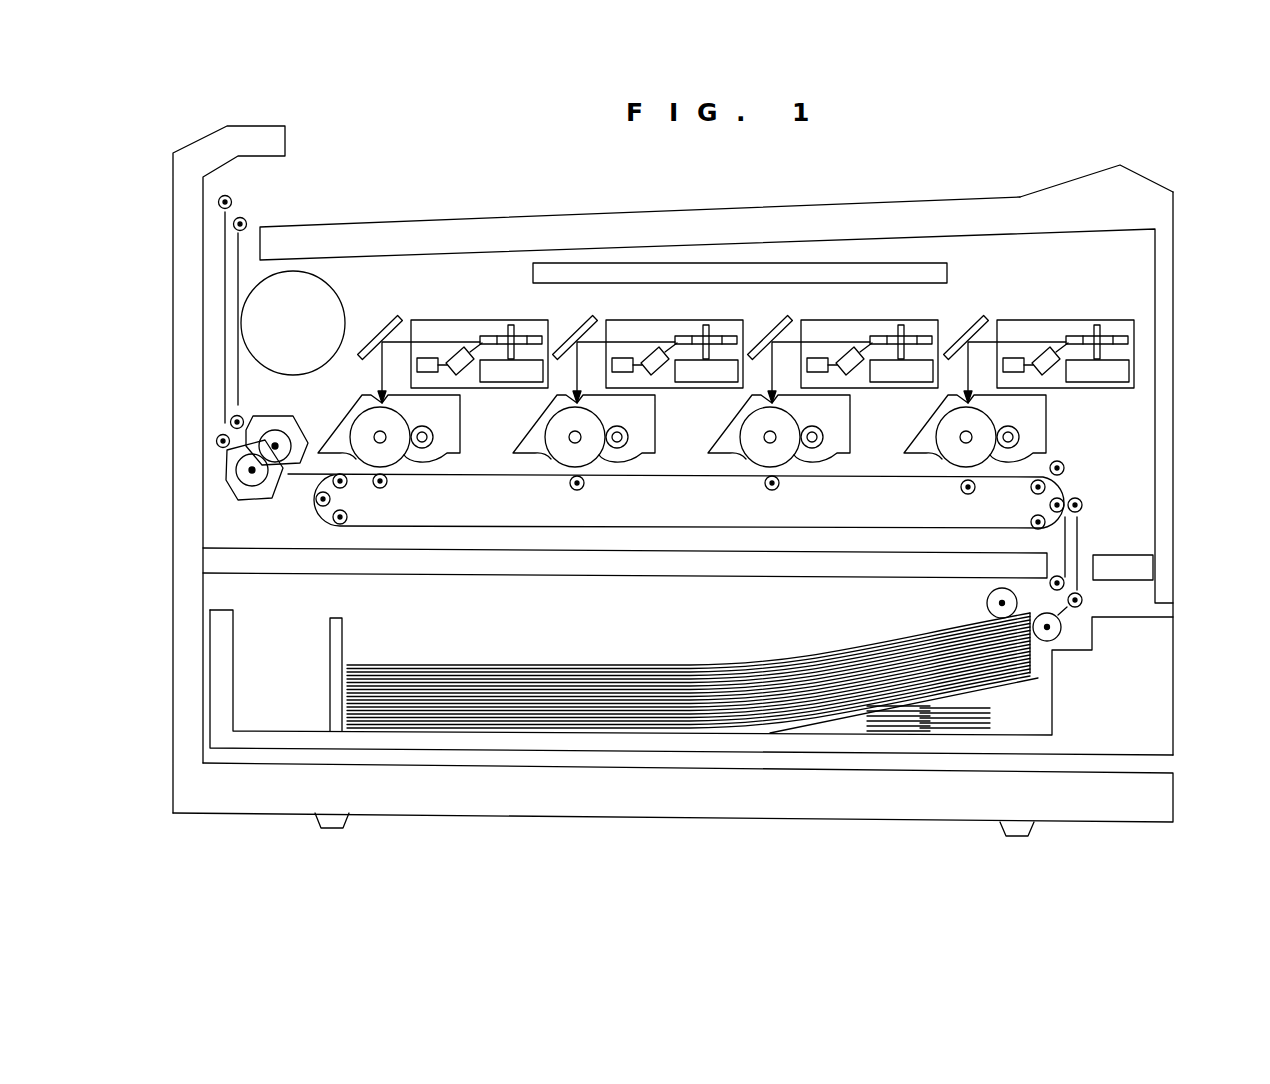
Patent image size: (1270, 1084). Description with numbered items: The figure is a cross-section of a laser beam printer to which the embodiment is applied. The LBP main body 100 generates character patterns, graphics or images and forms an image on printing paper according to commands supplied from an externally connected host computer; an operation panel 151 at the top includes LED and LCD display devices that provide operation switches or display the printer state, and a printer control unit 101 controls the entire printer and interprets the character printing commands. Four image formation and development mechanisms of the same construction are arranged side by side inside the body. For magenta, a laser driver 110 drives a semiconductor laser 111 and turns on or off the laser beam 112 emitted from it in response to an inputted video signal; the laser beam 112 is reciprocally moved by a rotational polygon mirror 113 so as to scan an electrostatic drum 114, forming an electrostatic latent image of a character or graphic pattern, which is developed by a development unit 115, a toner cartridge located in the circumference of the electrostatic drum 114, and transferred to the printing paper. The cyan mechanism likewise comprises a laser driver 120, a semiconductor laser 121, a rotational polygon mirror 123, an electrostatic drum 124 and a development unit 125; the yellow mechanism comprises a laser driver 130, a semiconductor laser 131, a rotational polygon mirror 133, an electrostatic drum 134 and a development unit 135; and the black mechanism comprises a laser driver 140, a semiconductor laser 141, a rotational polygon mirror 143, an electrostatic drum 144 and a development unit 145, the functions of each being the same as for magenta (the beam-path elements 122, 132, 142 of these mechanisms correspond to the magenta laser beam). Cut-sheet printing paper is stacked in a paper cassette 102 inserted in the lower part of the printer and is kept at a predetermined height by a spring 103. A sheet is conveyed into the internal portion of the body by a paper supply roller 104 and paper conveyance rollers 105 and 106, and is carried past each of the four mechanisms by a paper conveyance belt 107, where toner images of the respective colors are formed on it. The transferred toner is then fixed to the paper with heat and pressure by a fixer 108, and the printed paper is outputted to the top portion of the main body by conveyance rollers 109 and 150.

The LBP main body 100 is at (1177, 292).
The printer control unit 101 is at (950, 272).
The paper cassette 102 is at (1175, 690).
The spring 103 is at (927, 713).
The paper supply roller 104 is at (986, 603).
The paper conveyance roller 105 is at (1083, 600).
The paper conveyance roller 106 is at (1083, 505).
The paper conveyance belt 107 is at (810, 478).
The fixer 108 is at (226, 483).
The conveyance roller 109 is at (216, 441).
The laser driver 110 is at (1027, 330).
The semiconductor laser 111 is at (1039, 372).
The laser beam 112 is at (1064, 321).
The rotational polygon mirror 113 is at (1106, 326).
The electrostatic drum 114 is at (946, 460).
The development unit 115 is at (1017, 428).
The laser driver 120 is at (805, 329).
The semiconductor laser 121 is at (843, 372).
The polygon mirror 122 is at (854, 331).
The rotational polygon mirror 123 is at (905, 323).
The electrostatic drum 124 is at (748, 459).
The development unit 125 is at (804, 433).
The laser driver 130 is at (610, 329).
The semiconductor laser 131 is at (648, 372).
The polygon mirror 132 is at (659, 331).
The rotational polygon mirror 133 is at (710, 323).
The electrostatic drum 134 is at (553, 459).
The development unit 135 is at (609, 433).
The laser driver 140 is at (424, 358).
The semiconductor laser 141 is at (462, 389).
The polygon mirror 142 is at (457, 350).
The rotational polygon mirror 143 is at (492, 336).
The electrostatic drum 144 is at (366, 421).
The development unit 145 is at (450, 428).
The conveyance roller 150 is at (250, 218).
The operation panel 151 is at (1118, 170).